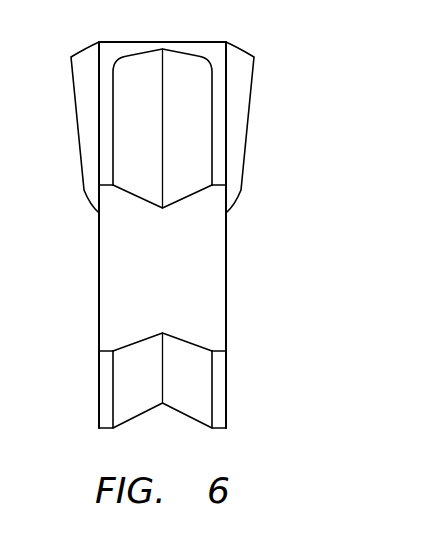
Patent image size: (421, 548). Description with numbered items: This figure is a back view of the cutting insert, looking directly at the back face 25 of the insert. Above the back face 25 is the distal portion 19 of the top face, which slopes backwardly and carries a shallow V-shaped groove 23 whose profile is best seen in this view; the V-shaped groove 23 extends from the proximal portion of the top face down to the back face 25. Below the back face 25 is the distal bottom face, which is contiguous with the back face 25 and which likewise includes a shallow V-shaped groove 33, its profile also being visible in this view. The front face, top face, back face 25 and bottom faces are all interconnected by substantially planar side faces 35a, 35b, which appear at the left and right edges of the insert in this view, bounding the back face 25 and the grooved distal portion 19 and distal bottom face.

The distal portion 19 is at (143, 134).
The V-shaped groove 23 is at (163, 156).
The back face 25 is at (170, 277).
The V-shaped groove 33 is at (163, 388).
The side face 35a is at (99, 310).
The side face 35b is at (226, 293).